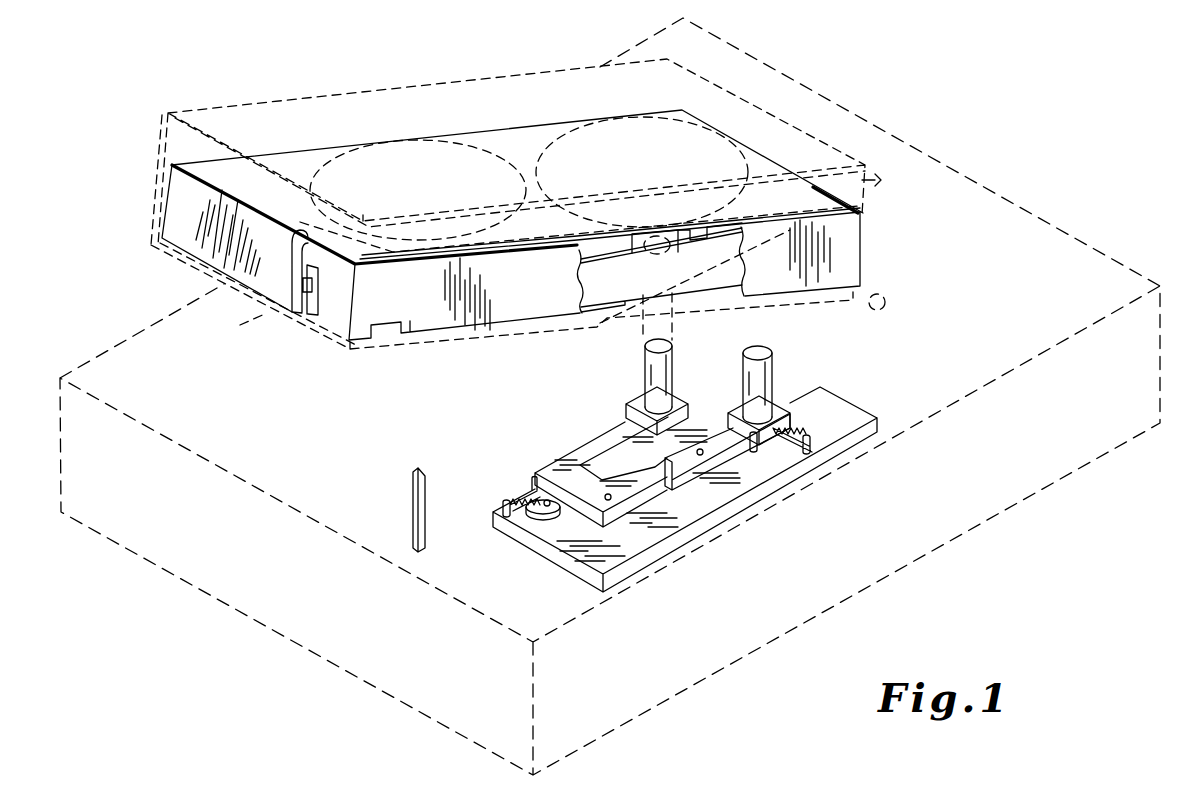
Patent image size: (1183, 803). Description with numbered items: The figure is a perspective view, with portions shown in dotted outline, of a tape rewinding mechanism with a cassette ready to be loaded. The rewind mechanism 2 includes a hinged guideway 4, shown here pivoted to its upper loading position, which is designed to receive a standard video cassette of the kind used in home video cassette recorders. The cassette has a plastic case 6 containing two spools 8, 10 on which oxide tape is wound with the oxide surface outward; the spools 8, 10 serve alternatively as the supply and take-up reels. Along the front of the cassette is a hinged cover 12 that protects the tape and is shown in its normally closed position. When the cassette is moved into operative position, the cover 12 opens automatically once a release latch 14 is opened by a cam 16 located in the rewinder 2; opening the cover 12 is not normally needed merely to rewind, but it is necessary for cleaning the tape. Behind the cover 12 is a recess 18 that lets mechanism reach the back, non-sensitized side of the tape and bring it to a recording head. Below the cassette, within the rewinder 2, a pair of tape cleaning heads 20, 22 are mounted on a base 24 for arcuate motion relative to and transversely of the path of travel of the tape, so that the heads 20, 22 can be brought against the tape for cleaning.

The rewind mechanism 2 is at (1067, 237).
The hinged guideway 4 is at (488, 78).
The plastic case 6 is at (263, 255).
The spool 8 is at (432, 144).
The spool 10 is at (607, 126).
The hinged cover 12 is at (419, 299).
The release latch 14 is at (302, 270).
The cam 16 is at (413, 500).
The recess 18 is at (687, 240).
The tape cleaning head 20 is at (665, 378).
The tape cleaning head 22 is at (770, 380).
The base 24 is at (845, 410).